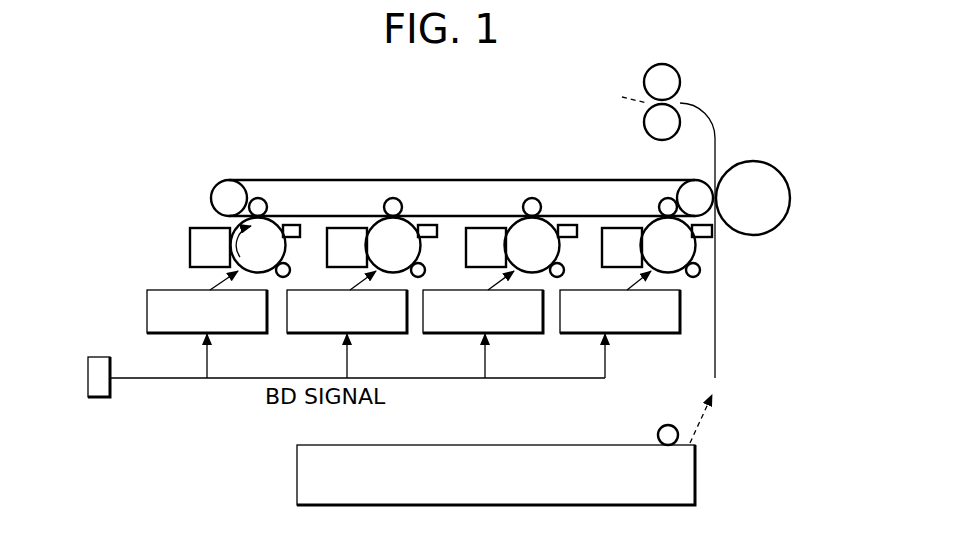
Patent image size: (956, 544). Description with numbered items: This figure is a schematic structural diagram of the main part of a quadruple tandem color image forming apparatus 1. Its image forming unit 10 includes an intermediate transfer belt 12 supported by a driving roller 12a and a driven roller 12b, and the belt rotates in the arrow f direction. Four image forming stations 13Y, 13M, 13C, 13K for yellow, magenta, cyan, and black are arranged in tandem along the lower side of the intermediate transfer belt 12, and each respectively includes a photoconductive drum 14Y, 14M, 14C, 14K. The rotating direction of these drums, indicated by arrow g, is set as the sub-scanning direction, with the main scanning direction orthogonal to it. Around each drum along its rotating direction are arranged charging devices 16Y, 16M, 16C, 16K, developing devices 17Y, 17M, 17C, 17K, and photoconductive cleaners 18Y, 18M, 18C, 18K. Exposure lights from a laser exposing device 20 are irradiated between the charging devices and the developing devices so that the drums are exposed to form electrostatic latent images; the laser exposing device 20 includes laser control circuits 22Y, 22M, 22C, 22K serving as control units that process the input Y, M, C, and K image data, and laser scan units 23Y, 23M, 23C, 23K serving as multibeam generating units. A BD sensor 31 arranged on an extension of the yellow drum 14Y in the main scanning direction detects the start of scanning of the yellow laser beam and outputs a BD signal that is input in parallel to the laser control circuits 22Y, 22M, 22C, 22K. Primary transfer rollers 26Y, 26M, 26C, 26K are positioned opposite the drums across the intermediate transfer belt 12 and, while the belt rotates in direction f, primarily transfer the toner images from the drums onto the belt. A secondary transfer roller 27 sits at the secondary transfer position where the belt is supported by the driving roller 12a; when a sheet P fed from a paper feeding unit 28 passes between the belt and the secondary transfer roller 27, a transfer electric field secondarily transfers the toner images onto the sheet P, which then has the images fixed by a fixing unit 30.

The color image forming apparatus 1 is at (802, 310).
The image forming unit 10 is at (188, 112).
The intermediate transfer belt 12 is at (313, 180).
The driving roller 12a is at (702, 184).
The driven roller 12b is at (225, 186).
The image forming station 13Y is at (200, 217).
The image forming station 13M is at (370, 222).
The image forming station 13C is at (510, 222).
The image forming station 13K is at (707, 255).
The photoconductive drum 14Y is at (265, 222).
The photoconductive drum 14M is at (407, 222).
The photoconductive drum 14C is at (545, 222).
The photoconductive drum 14K is at (657, 222).
The charging device 16Y is at (289, 272).
The charging device 16M is at (424, 272).
The charging device 16C is at (563, 272).
The charging device 16K is at (701, 270).
The developing device 17Y is at (190, 248).
The developing device 17M is at (347, 228).
The developing device 17C is at (495, 228).
The developing device 17K is at (617, 228).
The photoconductive cleaner 18Y is at (293, 226).
The photoconductive cleaner 18M is at (433, 226).
The photoconductive cleaner 18C is at (572, 226).
The photoconductive cleaner 18K is at (715, 232).
The laser exposing device 20 is at (384, 324).
The laser control circuit 22Y is at (233, 324).
The laser control circuit 22M is at (379, 324).
The laser control circuit 22C is at (511, 324).
The laser control circuit 22K is at (639, 324).
The laser scan unit 23Y is at (233, 334).
The laser scan unit 23M is at (373, 334).
The laser scan unit 23C is at (510, 334).
The laser scan unit 23K is at (630, 334).
The primary transfer roller 26Y is at (257, 198).
The primary transfer roller 26M is at (393, 198).
The primary transfer roller 26C is at (540, 198).
The primary transfer roller 26K is at (672, 198).
The secondary transfer roller 27 is at (772, 168).
The paper feeding unit 28 is at (297, 472).
The fixing unit 30 is at (681, 76).
The BD sensor 31 is at (88, 376).
The sheet P is at (717, 342).
The arrow f direction f is at (515, 163).
The arrow g direction g is at (236, 232).